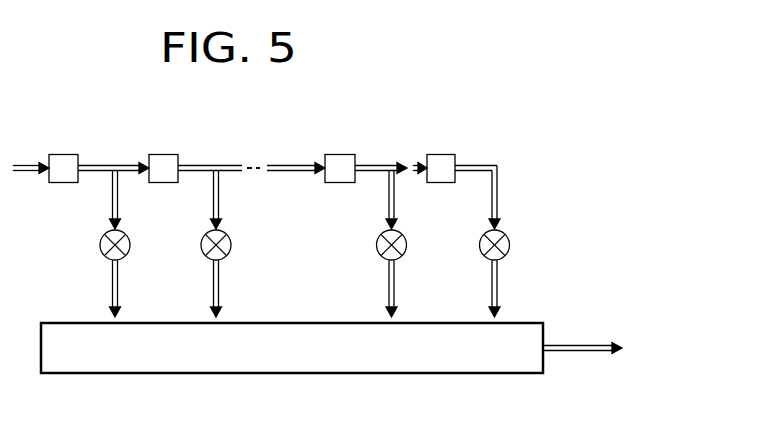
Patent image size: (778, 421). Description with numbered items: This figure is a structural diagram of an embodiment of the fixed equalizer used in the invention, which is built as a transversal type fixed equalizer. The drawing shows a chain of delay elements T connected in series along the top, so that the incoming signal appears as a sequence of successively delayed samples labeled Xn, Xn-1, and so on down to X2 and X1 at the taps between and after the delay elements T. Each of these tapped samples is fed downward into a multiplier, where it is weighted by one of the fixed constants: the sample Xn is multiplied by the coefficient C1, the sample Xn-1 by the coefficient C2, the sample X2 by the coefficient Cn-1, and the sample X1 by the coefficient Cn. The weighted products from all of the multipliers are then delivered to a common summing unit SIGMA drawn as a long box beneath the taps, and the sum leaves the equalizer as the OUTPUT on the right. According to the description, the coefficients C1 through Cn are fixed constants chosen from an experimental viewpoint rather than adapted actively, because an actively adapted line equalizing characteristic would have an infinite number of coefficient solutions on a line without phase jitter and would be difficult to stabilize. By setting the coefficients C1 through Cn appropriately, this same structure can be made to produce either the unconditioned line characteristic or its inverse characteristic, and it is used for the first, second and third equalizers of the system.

The delay element T is at (252, 168).
The input sample x_n Xn is at (61, 134).
The input sample x_n-1 Xn-1 is at (176, 134).
The input sample x_2 X2 is at (339, 134).
The input sample x_1 X1 is at (443, 134).
The fixed equalizer coefficient C1 is at (93, 242).
The fixed equalizer coefficient C2 is at (194, 242).
The fixed equalizer coefficient Cn-1 is at (369, 242).
The fixed equalizer coefficient Cn is at (472, 242).
The summation unit SIGMA is at (292, 348).
The filter output OUTPUT is at (619, 349).